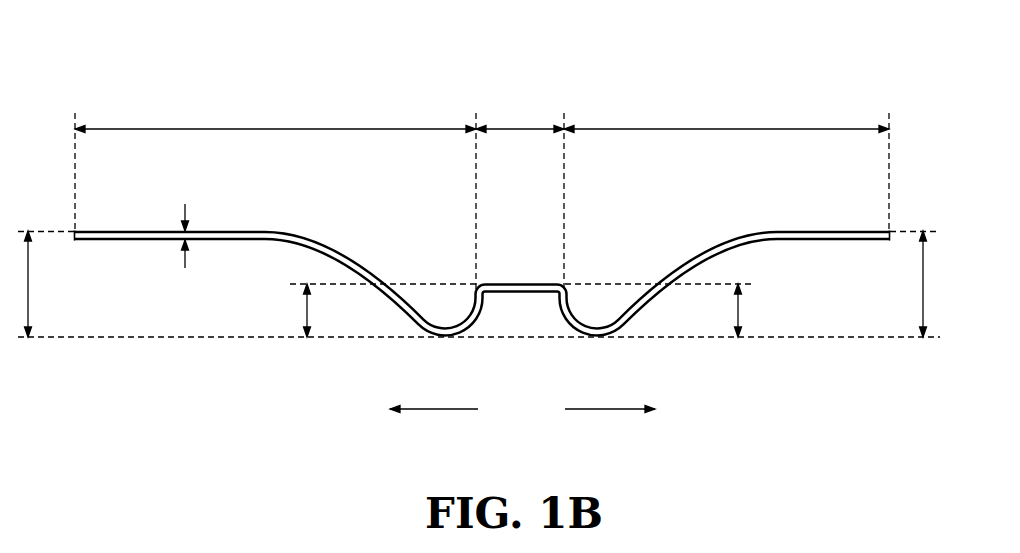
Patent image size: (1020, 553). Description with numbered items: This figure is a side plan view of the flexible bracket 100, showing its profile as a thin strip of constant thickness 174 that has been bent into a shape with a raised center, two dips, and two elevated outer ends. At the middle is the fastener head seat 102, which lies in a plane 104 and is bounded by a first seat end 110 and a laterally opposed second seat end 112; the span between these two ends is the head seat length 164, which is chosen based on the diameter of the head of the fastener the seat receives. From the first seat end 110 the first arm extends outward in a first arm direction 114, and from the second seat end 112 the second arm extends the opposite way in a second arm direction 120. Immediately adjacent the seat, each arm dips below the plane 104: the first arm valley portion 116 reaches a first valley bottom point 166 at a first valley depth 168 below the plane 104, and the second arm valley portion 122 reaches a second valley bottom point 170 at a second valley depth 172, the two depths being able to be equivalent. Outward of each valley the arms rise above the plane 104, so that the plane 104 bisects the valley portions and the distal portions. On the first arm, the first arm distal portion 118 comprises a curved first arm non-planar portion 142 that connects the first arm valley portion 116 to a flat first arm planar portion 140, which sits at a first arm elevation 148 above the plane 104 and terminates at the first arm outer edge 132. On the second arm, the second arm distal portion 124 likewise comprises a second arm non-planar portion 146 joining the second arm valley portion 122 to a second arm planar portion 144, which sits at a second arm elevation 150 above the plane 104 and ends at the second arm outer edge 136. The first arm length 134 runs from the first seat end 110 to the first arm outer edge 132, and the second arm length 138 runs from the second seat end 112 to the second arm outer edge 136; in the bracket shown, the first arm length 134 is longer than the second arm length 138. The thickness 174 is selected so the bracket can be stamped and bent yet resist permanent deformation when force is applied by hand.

The flexible bracket 100 is at (648, 58).
The fastener head seat 102 is at (521, 283).
The plane 104 is at (521, 294).
The first seat end 110 is at (472, 283).
The second seat end 112 is at (571, 283).
The first arm direction 114 is at (433, 411).
The first arm valley portion 116 is at (487, 337).
The first arm distal portion 118 is at (291, 230).
The second arm direction 120 is at (606, 411).
The second arm valley portion 122 is at (555, 337).
The second arm distal portion 124 is at (756, 230).
The first arm outer edge 132 is at (74, 241).
The first arm length 134 is at (272, 128).
The second arm outer edge 136 is at (890, 241).
The second arm length 138 is at (730, 128).
The first arm planar portion 140 is at (144, 230).
The first arm non-planar portion 142 is at (336, 247).
The second arm planar portion 144 is at (829, 230).
The second arm non-planar portion 146 is at (688, 258).
The first arm elevation 148 is at (32, 292).
The second arm elevation 150 is at (921, 291).
The head seat length 164 is at (520, 128).
The first valley bottom point 166 is at (445, 343).
The first valley depth 168 is at (305, 312).
The second valley bottom point 170 is at (605, 343).
The second valley depth 172 is at (741, 331).
The thickness 174 is at (186, 214).